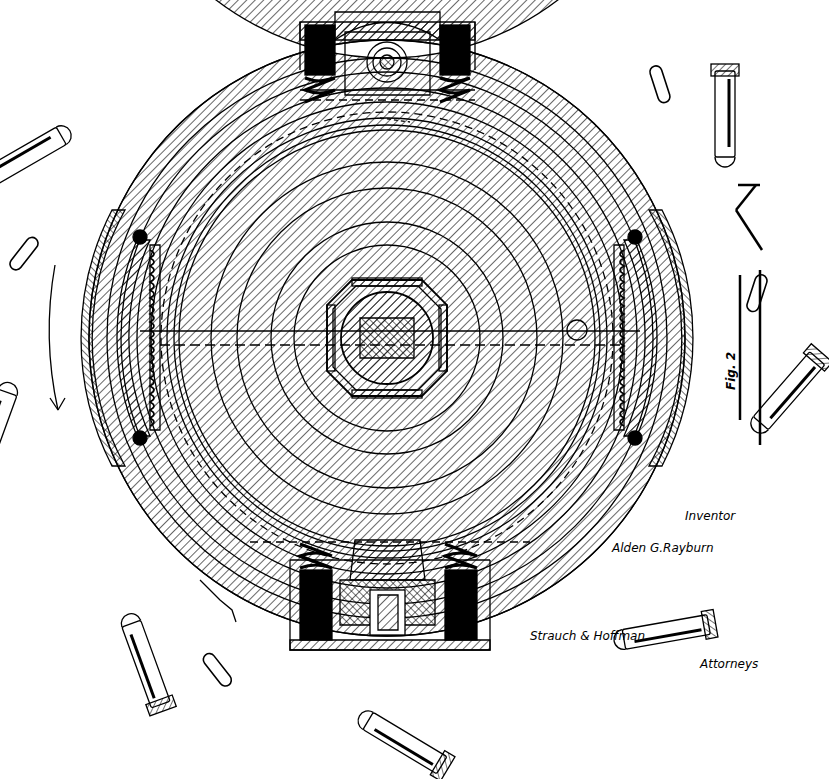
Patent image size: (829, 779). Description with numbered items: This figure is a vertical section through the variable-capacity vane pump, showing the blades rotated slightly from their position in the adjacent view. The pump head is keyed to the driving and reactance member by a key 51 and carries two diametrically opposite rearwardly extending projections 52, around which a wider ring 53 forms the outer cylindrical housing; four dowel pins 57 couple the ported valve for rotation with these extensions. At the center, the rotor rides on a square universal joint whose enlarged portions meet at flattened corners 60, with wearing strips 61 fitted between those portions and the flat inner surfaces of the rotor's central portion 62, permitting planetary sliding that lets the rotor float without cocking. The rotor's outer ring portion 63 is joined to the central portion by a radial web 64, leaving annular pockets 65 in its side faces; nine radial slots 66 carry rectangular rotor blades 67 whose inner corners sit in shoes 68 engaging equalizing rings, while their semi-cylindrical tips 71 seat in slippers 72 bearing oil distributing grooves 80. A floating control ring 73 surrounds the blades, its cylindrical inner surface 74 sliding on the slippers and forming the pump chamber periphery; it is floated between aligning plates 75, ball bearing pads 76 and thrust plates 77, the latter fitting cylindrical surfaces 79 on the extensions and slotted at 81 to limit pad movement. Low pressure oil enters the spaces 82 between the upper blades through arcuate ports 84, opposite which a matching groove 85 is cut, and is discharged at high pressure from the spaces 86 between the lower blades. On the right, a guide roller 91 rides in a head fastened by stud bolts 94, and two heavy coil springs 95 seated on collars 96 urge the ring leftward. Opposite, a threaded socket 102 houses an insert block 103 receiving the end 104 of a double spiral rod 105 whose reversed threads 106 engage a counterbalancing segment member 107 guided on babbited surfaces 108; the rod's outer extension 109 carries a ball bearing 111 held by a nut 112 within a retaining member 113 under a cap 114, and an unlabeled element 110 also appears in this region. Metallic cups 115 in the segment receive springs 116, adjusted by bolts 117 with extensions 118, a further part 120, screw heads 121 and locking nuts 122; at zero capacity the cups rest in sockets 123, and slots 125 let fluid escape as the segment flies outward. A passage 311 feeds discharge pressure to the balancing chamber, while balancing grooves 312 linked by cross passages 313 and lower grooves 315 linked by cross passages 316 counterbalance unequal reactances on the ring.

The key 51 is at (130, 206).
The projections 52 is at (122, 232).
The ring 53 is at (150, 138).
The dowel pins 57 is at (130, 432).
The flattened corner 60 is at (401, 330).
The wearing strip 61 is at (380, 338).
The central portion 62 is at (386, 280).
The outer ring portion 63 is at (390, 300).
The radial web 64 is at (414, 389).
The annular pockets 65 is at (560, 333).
The slots 66 is at (516, 283).
The rotor blades 67 is at (384, 435).
The shoe 68 is at (415, 457).
The semi-cylindrical tips 71 is at (650, 300).
The slippers 72 is at (352, 158).
The floating control ring 73 is at (210, 180).
The cylindrical inner surface 74 is at (249, 97).
The aligning plates 75 is at (585, 220).
The ball bearing pads 76 is at (135, 300).
The thrust plates 77 is at (160, 372).
The cylindrical surfaces 79 is at (150, 334).
The oil distributing grooves 80 is at (380, 180).
The slots 81 is at (148, 496).
The spaces 82 is at (272, 335).
The ports 84 is at (540, 170).
The groove 85 is at (283, 175).
The spaces 86 is at (525, 310).
The guide roller 91 is at (394, 6).
The stud bolts 94 is at (290, 96).
The coil springs 95 is at (310, 86).
The collar 96 is at (302, 36).
The socket 102 is at (352, 472).
The insert block 103 is at (427, 581).
The end 104 is at (395, 162).
The double spiral rod 105 is at (390, 562).
The threads 106 is at (280, 651).
The segment member 107 is at (486, 645).
The babbited surfaces 108 is at (628, 497).
The outer extension 109 is at (180, 546).
The pin 110 is at (514, 553).
The ball bearing 111 is at (472, 668).
The nut 112 is at (440, 529).
The retaining member 113 is at (268, 554).
The cap 114 is at (366, 498).
The metallic cups 115 is at (367, 635).
The springs 116 is at (496, 565).
The bolts 117 is at (250, 627).
The extensions 118 is at (383, 610).
The washer 120 is at (232, 651).
The screw heads 121 is at (262, 658).
The locking nuts 122 is at (434, 494).
The sockets 123 is at (538, 534).
The slots 125 is at (376, 558).
The passage 311 is at (542, 294).
The balancing grooves 312 is at (218, 120).
The cross passages 313 is at (175, 150).
The grooves 315 is at (590, 488).
The cross passages 316 is at (576, 319).